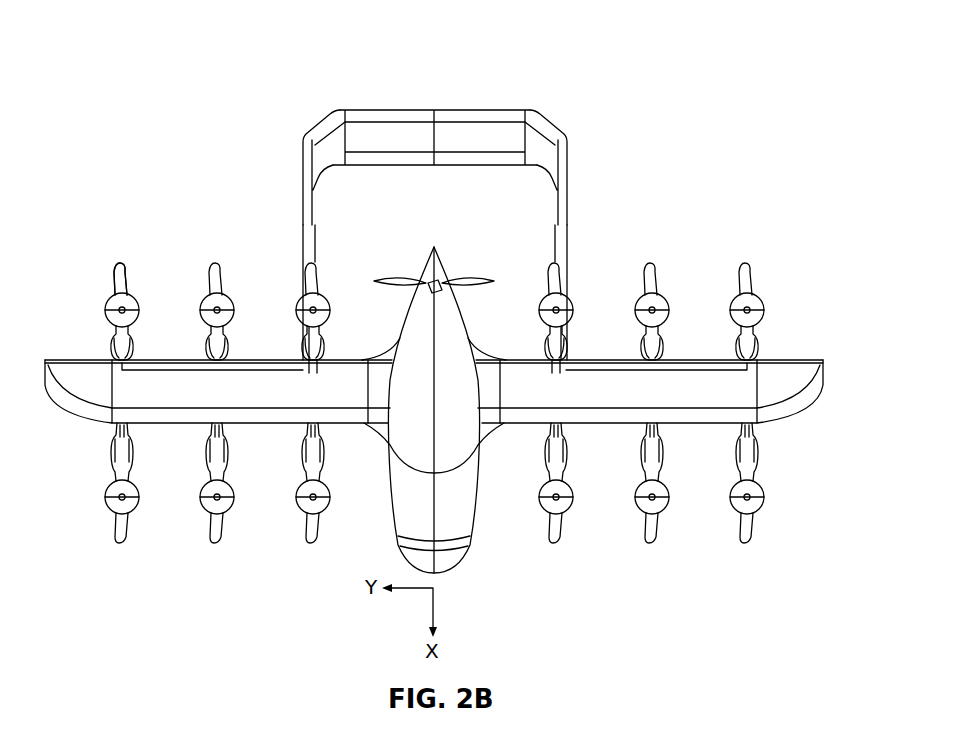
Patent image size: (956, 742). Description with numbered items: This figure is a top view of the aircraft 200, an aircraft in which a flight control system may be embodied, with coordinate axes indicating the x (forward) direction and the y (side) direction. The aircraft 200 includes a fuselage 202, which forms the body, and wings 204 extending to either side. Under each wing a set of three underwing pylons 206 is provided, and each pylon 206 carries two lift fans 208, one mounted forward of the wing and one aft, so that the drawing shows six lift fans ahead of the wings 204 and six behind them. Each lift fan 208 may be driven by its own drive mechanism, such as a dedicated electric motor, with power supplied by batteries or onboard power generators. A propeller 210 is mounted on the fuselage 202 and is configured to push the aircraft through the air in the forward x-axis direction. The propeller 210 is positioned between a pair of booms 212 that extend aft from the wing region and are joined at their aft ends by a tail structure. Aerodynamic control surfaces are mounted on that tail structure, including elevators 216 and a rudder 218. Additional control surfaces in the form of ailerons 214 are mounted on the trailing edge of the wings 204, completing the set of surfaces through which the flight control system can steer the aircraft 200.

The aircraft 200 is at (190, 86).
The fuselage 202 is at (478, 547).
The wings 204 is at (78, 405).
The underwing pylon 206 is at (128, 272).
The lift fan 208 is at (108, 307).
The propeller 210 is at (462, 278).
The booms 212 is at (568, 205).
The ailerons 214 is at (256, 360).
The elevators 216 is at (458, 110).
The rudder 218 is at (548, 118).